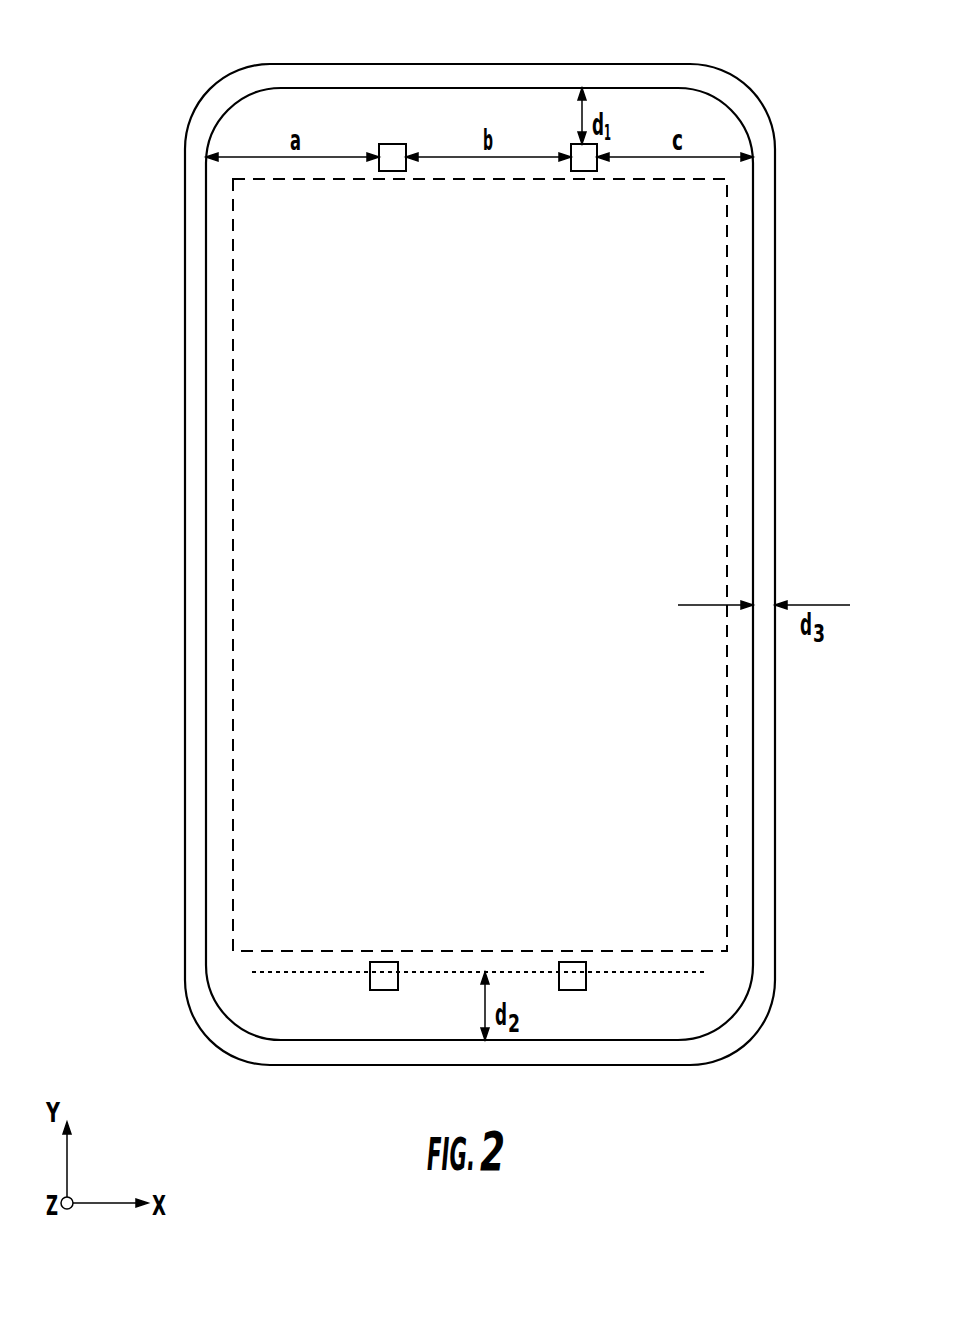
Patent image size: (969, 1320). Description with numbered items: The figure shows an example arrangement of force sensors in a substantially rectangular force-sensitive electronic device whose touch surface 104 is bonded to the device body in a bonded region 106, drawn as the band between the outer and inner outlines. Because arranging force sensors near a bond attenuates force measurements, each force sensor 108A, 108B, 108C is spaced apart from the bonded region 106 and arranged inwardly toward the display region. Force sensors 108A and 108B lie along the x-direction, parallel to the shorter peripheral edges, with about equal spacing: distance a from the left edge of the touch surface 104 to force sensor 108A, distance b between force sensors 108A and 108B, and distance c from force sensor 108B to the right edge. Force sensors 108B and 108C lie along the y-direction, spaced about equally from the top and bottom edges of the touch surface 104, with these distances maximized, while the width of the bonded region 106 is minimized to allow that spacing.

The touch surface 104 is at (700, 337).
The bonded region 106 is at (768, 400).
The force sensor 108A is at (383, 144).
The force sensor 108B is at (576, 144).
The force sensor 108C is at (571, 990).